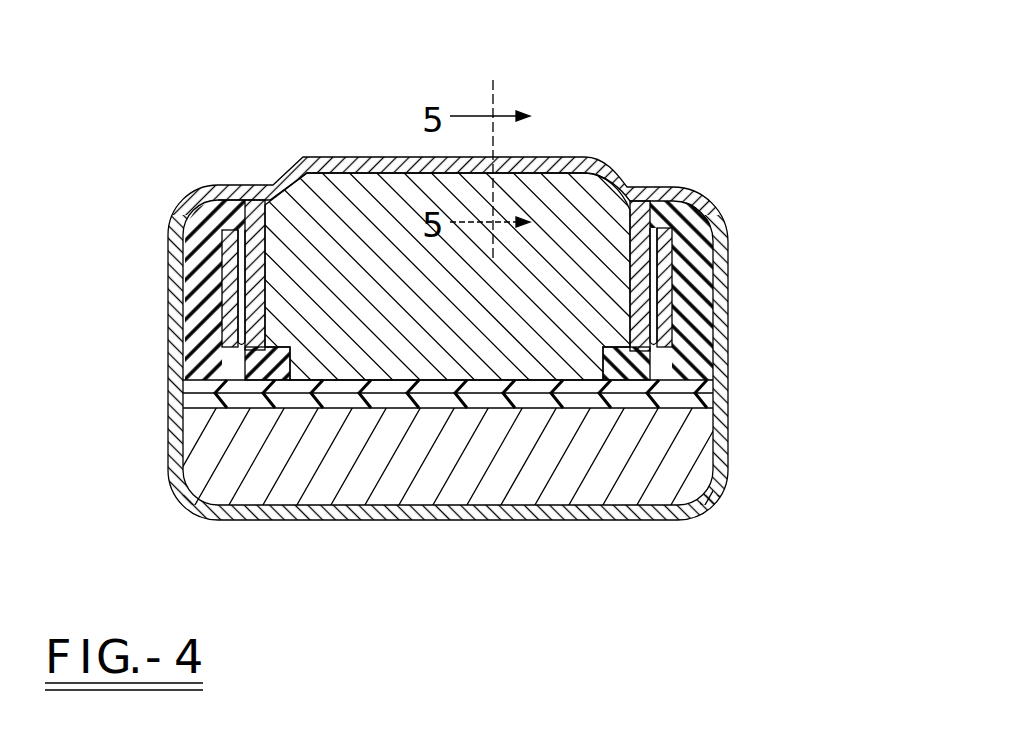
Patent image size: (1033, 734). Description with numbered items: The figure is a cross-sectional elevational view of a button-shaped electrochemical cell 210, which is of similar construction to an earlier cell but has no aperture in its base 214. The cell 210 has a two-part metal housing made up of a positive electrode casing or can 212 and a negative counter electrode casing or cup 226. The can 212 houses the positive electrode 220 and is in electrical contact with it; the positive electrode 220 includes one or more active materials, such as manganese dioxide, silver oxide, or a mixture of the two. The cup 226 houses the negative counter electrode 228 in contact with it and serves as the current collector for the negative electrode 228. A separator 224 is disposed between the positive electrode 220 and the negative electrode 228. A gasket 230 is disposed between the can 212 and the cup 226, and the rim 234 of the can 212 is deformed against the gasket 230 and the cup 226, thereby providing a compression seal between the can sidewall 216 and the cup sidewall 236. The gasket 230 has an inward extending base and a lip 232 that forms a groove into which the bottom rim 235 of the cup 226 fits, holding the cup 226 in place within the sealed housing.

The cell 210 is at (281, 134).
The positive electrode casing or can 212 is at (176, 222).
The base 214 is at (385, 497).
The sidewall of the can 216 is at (168, 346).
The positive electrode 220 is at (165, 500).
The separator 224 is at (733, 380).
The negative counter electrode casing or cup 226 is at (348, 158).
The negative counter electrode 228 is at (590, 250).
The gasket 230 is at (205, 248).
The lip 232 is at (290, 348).
The rim 234 is at (660, 188).
The bottom rim 235 is at (195, 372).
The sidewall of the cup 236 is at (222, 303).